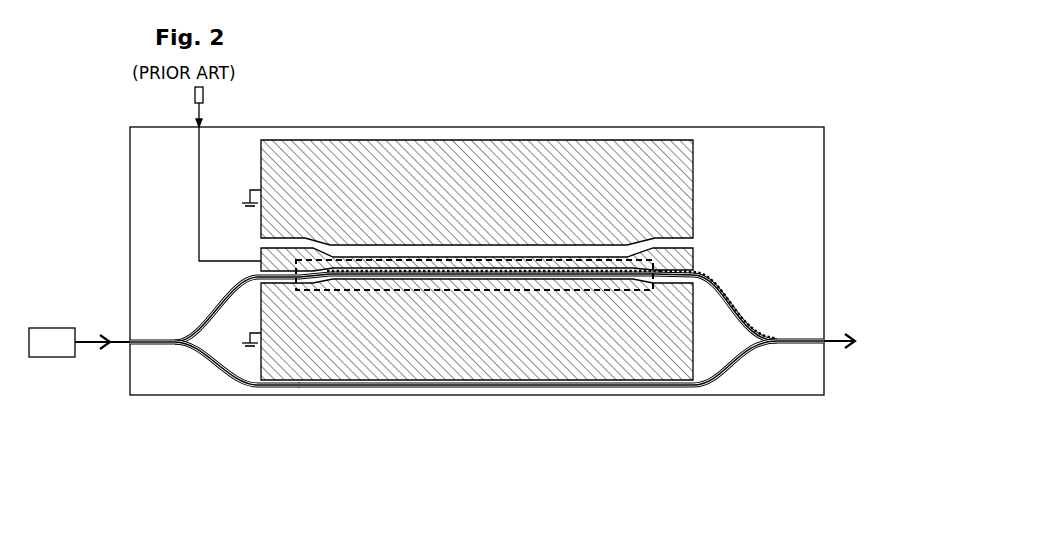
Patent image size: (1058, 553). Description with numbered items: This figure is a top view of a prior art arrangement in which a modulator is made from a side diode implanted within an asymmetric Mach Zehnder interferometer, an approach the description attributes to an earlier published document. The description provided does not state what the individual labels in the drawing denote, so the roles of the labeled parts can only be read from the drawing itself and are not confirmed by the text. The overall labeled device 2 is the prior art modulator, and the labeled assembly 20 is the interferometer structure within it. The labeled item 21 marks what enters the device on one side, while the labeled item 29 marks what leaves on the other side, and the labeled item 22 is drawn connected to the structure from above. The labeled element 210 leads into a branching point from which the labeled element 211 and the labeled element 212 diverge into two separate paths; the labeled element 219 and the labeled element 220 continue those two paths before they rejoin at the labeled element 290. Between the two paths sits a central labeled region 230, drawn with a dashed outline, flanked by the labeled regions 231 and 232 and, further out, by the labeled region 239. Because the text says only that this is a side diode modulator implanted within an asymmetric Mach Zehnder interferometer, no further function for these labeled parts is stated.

The optical modulator (prior art) 2 is at (618, 112).
The Mach-Zehnder optical waveguide 20 is at (450, 388).
The input light 21 is at (100, 332).
The drive signal source 22 is at (204, 94).
The output light 29 is at (836, 335).
The input waveguide 210 is at (142, 346).
The first branch waveguide 211 is at (212, 316).
The second branch waveguide 212 is at (213, 372).
The first arm waveguide 219 is at (735, 303).
The second arm waveguide 220 is at (333, 390).
The signal electrode 230 is at (653, 258).
The lower ground electrode 231 is at (687, 310).
The ridge portion 232 is at (685, 258).
The upper ground electrode 239 is at (675, 220).
The output waveguide 290 is at (800, 387).